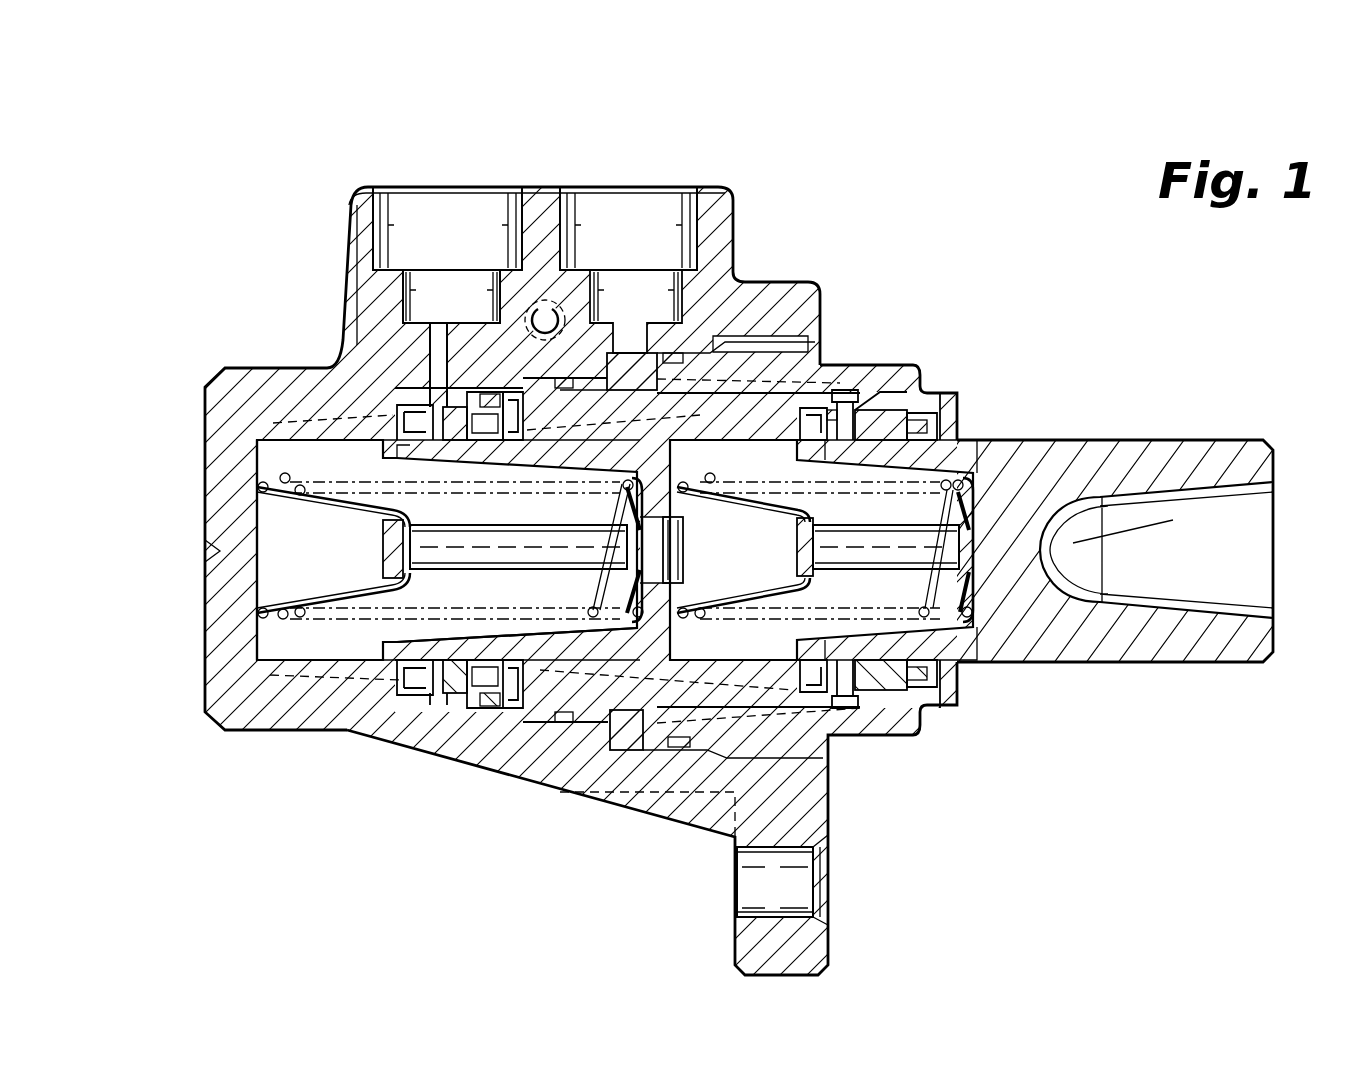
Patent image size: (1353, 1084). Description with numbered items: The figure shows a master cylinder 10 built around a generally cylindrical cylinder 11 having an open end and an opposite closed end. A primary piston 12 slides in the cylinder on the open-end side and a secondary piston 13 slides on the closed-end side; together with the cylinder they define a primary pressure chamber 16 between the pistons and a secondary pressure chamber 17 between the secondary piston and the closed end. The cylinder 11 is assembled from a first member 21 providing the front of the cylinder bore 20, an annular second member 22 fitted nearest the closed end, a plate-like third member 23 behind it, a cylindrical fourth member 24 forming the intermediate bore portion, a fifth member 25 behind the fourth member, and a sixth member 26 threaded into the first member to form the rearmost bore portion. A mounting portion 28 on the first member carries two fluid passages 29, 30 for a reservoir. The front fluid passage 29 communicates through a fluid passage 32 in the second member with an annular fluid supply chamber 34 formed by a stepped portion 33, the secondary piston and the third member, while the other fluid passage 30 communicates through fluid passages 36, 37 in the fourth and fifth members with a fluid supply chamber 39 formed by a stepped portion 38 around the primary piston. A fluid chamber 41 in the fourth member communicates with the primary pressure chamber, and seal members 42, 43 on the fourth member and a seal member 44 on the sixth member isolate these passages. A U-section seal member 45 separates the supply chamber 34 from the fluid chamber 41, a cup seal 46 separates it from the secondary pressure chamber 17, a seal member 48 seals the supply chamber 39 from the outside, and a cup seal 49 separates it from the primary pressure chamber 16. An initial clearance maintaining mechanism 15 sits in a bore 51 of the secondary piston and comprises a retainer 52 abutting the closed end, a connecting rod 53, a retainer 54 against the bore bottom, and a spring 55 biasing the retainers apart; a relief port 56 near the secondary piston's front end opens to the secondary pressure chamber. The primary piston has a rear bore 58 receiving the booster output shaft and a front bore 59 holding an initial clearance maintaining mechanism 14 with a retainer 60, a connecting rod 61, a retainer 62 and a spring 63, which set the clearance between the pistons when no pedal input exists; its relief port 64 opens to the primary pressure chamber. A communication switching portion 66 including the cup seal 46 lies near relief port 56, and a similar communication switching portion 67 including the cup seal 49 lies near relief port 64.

The master cylinder 10 is at (862, 192).
The cylinder 11 is at (238, 364).
The primary piston 12 is at (1064, 668).
The secondary piston 13 is at (560, 668).
The initial clearance maintaining mechanism 14 is at (946, 622).
The initial clearance maintaining mechanism 15 is at (363, 668).
The primary pressure chamber 16 is at (917, 720).
The secondary pressure chamber 17 is at (290, 658).
The cylinder bore 20 is at (297, 446).
The first member 21 is at (222, 482).
The second member 22 is at (447, 697).
The third member 23 is at (478, 717).
The fourth member 24 is at (593, 713).
The fifth member 25 is at (873, 693).
The sixth member 26 is at (743, 748).
The mounting portion 28 is at (358, 240).
The fluid passage 29 is at (437, 353).
The fluid passage 30 is at (628, 326).
The fluid passage 32 is at (437, 393).
The stepped portion 33 is at (482, 442).
The fluid supply chamber 34 is at (445, 442).
The fluid passage 36 is at (838, 397).
The fluid passage 37 is at (885, 395).
The stepped portion 38 is at (882, 450).
The fluid supply chamber 39 is at (846, 455).
The fluid chamber 41 is at (510, 385).
The seal member 42 is at (440, 395).
The seal member 43 is at (576, 345).
The seal member 44 is at (717, 318).
The seal member 45 is at (522, 445).
The cup seal 46 is at (390, 448).
The seal member 48 is at (940, 420).
The cup seal 49 is at (797, 445).
The bore 51 is at (507, 620).
The retainer 52 is at (257, 584).
The connecting rod 53 is at (385, 555).
The retainer 54 is at (602, 587).
The spring 55 is at (360, 588).
The relief port 56 is at (370, 514).
The bore 58 is at (1192, 600).
The bore 59 is at (917, 610).
The retainer 60 is at (727, 593).
The connecting rod 61 is at (797, 553).
The retainer 62 is at (1000, 586).
The spring 63 is at (773, 516).
The relief port 64 is at (905, 420).
The communication switching portion 66 is at (388, 427).
The communication switching portion 67 is at (836, 392).